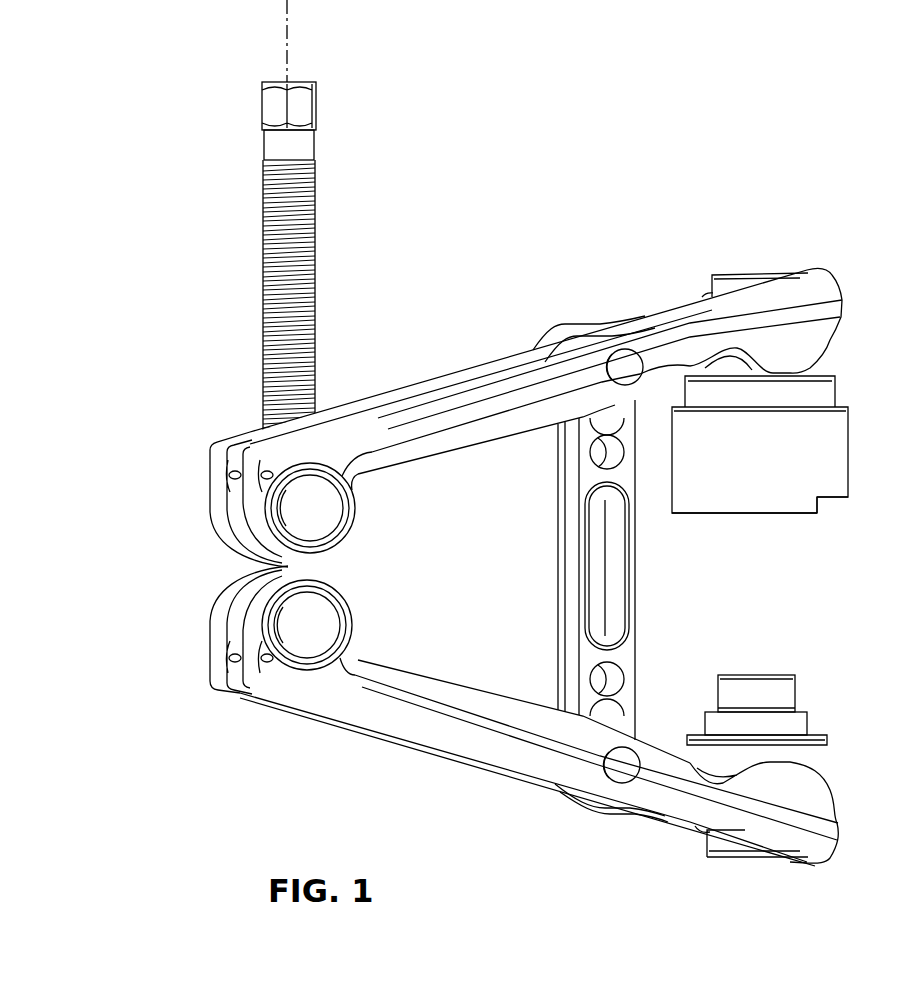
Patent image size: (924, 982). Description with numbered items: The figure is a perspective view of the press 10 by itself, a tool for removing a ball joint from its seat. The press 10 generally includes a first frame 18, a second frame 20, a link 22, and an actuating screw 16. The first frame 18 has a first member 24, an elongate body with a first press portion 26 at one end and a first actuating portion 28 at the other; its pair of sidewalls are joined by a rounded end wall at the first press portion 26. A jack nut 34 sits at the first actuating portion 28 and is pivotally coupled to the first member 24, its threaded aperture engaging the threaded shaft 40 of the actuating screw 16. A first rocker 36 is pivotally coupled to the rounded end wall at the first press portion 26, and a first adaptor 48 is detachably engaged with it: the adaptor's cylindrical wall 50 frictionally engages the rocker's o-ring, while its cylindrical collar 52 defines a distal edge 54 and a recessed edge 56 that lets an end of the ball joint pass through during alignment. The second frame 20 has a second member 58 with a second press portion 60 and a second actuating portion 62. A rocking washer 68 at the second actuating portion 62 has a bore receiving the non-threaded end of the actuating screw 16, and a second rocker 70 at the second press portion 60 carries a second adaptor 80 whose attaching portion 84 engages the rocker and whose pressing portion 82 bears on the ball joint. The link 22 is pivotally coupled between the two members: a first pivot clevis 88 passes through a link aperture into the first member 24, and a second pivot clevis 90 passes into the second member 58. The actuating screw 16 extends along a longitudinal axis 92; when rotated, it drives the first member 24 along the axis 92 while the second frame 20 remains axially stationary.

The press 10 is at (836, 145).
The actuating screw 16 is at (259, 214).
The first frame 18 is at (490, 342).
The second frame 20 is at (497, 785).
The link 22 is at (549, 576).
The first member 24 is at (445, 382).
The first press portion 26 is at (830, 325).
The first actuating portion 28 is at (212, 490).
The jack nut 34 is at (328, 504).
The first rocker 36 is at (722, 272).
The threaded shaft 40 is at (265, 292).
The first adaptor 48 is at (848, 455).
The cylindrical wall 50 is at (823, 400).
The cylindrical collar 52 is at (703, 500).
The distal edge 54 is at (781, 514).
The recessed edge 56 is at (832, 500).
The second member 58 is at (428, 735).
The second press portion 60 is at (832, 845).
The second actuating portion 62 is at (212, 678).
The rocking washer 68 is at (326, 626).
The second rocker 70 is at (722, 858).
The second adaptor 80 is at (798, 703).
The pressing portion 82 is at (718, 696).
The attaching portion 84 is at (800, 724).
The first pivot clevis 88 is at (628, 366).
The second pivot clevis 90 is at (622, 768).
The longitudinal axis 92 is at (288, 32).